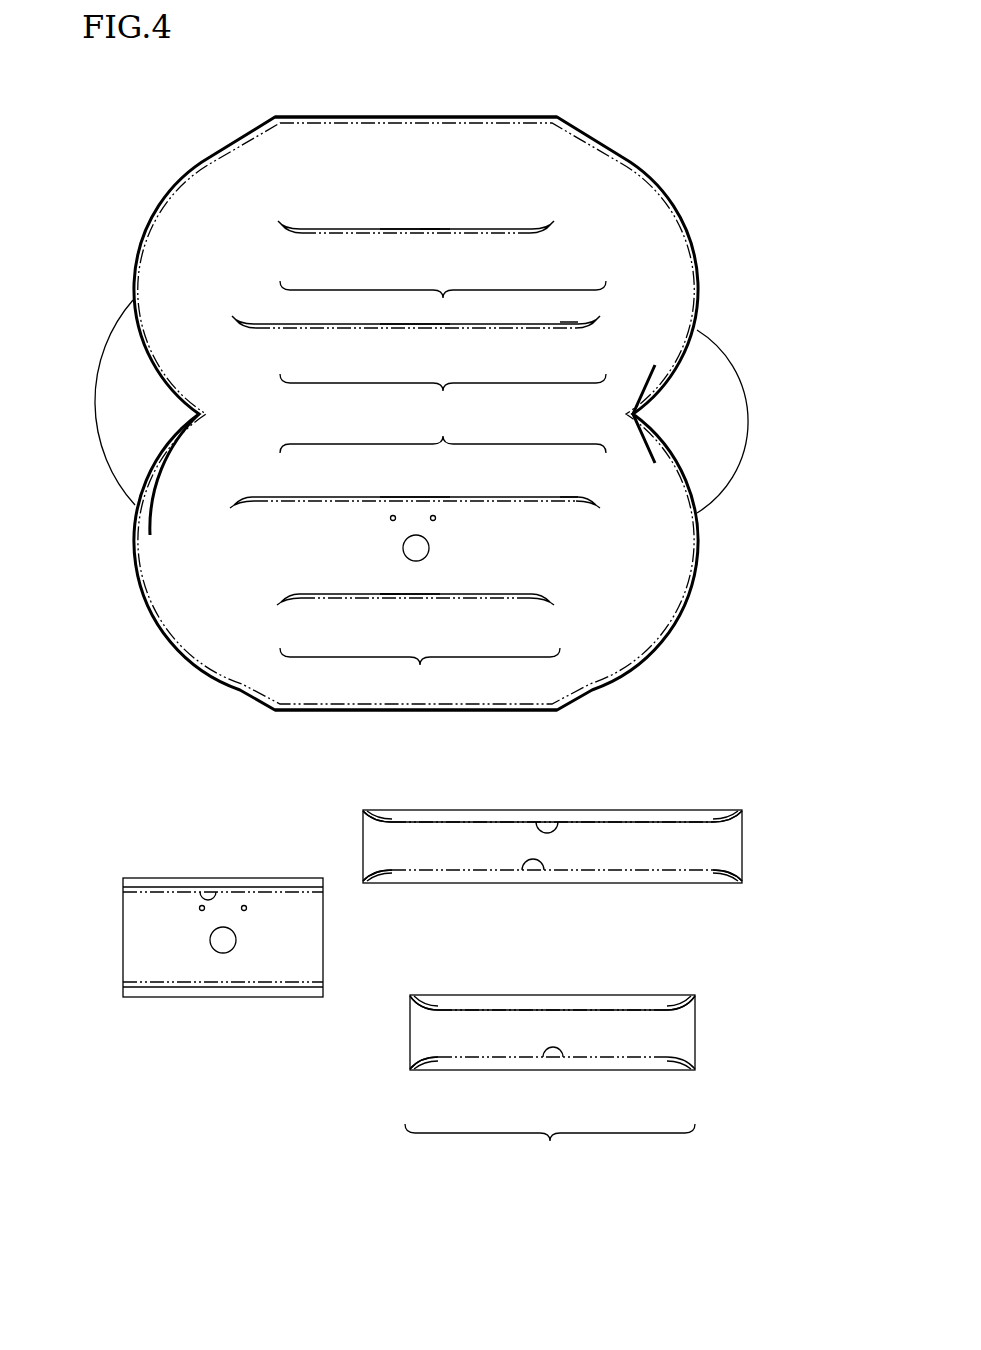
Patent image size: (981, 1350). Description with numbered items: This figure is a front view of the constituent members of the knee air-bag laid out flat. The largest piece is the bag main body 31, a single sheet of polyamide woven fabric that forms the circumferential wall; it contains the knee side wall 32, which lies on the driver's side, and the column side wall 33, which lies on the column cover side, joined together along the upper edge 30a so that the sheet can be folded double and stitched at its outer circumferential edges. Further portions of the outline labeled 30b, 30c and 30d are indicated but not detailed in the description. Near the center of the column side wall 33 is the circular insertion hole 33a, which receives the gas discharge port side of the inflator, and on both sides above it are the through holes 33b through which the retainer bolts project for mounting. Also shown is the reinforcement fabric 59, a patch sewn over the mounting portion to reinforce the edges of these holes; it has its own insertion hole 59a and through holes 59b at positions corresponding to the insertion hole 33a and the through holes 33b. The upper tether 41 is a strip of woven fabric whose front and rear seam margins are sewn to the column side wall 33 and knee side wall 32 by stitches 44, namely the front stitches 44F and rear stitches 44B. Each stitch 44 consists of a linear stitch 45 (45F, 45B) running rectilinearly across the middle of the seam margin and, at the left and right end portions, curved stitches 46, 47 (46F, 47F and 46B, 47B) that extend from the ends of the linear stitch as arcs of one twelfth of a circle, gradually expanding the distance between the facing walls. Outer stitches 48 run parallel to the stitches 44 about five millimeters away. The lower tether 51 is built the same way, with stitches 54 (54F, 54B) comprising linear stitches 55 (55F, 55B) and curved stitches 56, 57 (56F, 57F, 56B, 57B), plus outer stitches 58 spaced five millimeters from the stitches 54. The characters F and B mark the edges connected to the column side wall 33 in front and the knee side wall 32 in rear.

The bag main body 31 is at (148, 188).
The knee side wall 32 is at (240, 152).
The upper edge 30a is at (602, 416).
The straight edge portion 30b is at (402, 124).
The left recess 30c is at (103, 402).
The right recess 30d is at (729, 421).
The column side wall 33 is at (152, 533).
The insertion hole 33a is at (429, 549).
The through holes 33b is at (436, 518).
The upper tether 41 is at (373, 797).
The stitches 44 is at (458, 868).
The rear stitches 44B is at (419, 367).
The front stitches 44F is at (418, 462).
The linear stitches 45 is at (558, 821).
The rear linear stitch 45B is at (403, 330).
The front linear stitch 45F is at (402, 495).
The curved stitch 46 is at (750, 823).
The rear curved stitch 46B is at (598, 333).
The front curved stitch 46F is at (594, 496).
The curved stitch 47 is at (367, 823).
The rear curved stitch 47B is at (240, 330).
The front curved stitch 47F is at (240, 495).
The outer stitches 48 is at (531, 504).
The lower tether 51 is at (374, 1037).
The stitches 54 is at (496, 1010).
The rear stitches 54B is at (442, 273).
The front stitches 54F is at (418, 643).
The linear stitches 55 is at (543, 1013).
The rear linear stitch 55B is at (403, 237).
The front linear stitch 55F is at (403, 603).
The curved stitch 56 is at (693, 1013).
The rear curved stitch 56B is at (549, 237).
The front curved stitch 56F is at (548, 603).
The curved stitch 57 is at (408, 1010).
The rear curved stitch 57B is at (283, 234).
The front curved stitch 57F is at (300, 600).
The outer stitches 58 is at (432, 230).
The reinforcement fabric 59 is at (125, 859).
The insertion hole 59a is at (212, 941).
The through holes 59b is at (200, 909).